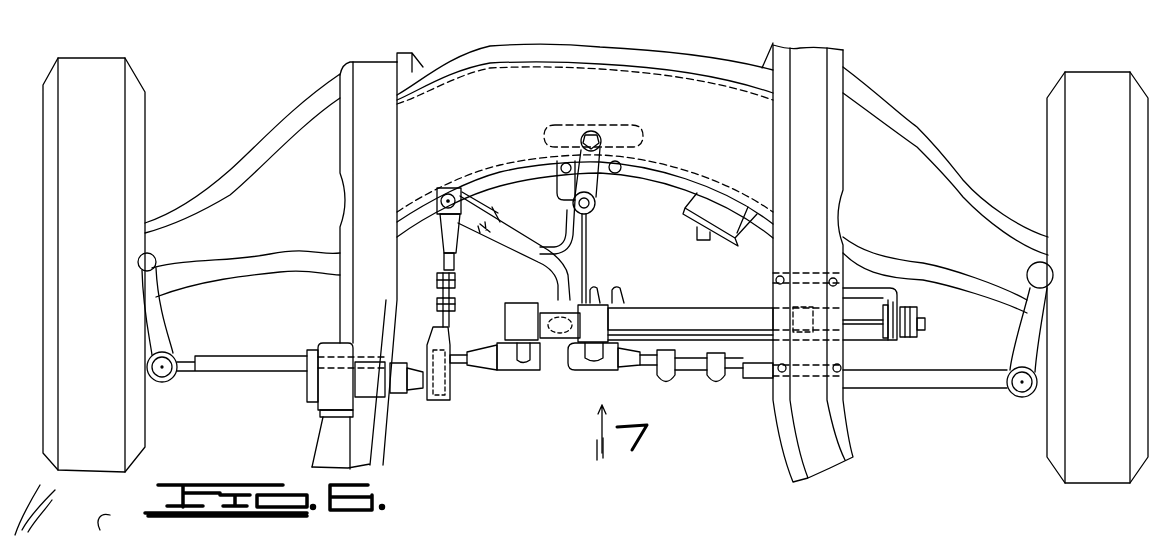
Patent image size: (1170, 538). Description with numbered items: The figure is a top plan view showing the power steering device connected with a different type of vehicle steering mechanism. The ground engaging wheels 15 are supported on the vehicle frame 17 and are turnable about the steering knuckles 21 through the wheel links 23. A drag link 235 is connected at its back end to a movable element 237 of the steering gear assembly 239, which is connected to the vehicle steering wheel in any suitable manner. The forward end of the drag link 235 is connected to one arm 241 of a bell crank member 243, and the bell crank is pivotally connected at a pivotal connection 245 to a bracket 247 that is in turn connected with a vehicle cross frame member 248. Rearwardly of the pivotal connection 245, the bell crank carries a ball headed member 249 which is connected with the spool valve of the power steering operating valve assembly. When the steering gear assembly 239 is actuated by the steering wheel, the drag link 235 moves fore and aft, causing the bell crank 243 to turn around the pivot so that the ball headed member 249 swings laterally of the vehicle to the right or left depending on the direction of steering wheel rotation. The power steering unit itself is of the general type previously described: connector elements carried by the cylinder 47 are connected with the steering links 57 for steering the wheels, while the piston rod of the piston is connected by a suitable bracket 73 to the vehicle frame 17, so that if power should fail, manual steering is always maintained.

The ground engaging wheel 15 is at (115, 445).
The vehicle frame 17 is at (820, 430).
The steering knuckle 21 is at (156, 262).
The wheel link 23 is at (152, 343).
The cylinder 47 is at (679, 305).
The steering link 57 is at (485, 362).
The bracket 73 is at (885, 345).
The drag link 235 is at (445, 401).
The movable element 237 is at (408, 400).
The steering gear assembly 239 is at (311, 410).
The arm 241 is at (502, 240).
The bell crank member 243 is at (590, 259).
The pivotal connection 245 is at (600, 202).
The bracket 247 is at (603, 150).
The vehicle cross frame member 248 is at (650, 72).
The ball headed member 249 is at (553, 340).